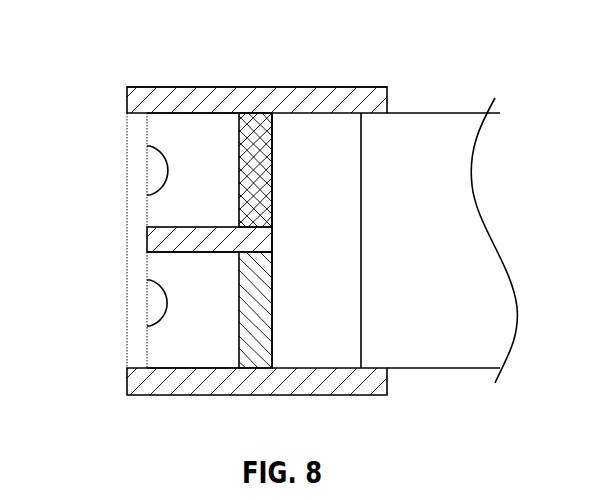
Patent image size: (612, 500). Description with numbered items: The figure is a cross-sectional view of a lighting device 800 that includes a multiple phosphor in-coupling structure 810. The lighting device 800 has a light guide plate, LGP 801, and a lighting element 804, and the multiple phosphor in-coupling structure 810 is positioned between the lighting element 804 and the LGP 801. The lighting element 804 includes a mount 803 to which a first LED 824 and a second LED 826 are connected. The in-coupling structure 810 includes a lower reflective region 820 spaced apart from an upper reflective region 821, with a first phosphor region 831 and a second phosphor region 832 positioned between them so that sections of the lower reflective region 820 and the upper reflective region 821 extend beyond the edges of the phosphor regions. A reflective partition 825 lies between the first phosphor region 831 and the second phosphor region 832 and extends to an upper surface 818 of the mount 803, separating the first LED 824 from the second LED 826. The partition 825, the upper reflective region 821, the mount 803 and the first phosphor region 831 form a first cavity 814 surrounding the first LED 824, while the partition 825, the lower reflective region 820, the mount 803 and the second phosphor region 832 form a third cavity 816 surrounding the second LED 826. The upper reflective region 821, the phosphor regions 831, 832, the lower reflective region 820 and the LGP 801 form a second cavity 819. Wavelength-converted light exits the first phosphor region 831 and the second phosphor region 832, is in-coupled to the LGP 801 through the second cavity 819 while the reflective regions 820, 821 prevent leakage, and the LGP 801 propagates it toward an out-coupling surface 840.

The lighting device 800 is at (85, 72).
The light guide plate 801 is at (452, 132).
The mount 803 is at (132, 200).
The lighting element 804 is at (125, 237).
The multiple phosphor in-coupling structure 810 is at (135, 88).
The first cavity 814 is at (197, 128).
The third cavity 816 is at (230, 332).
The upper surface 818 is at (152, 352).
The second cavity 819 is at (312, 132).
The lower reflective region 820 is at (350, 383).
The upper reflective region 821 is at (218, 92).
The first LED 824 is at (158, 172).
The reflective partition 825 is at (210, 253).
The second LED 826 is at (147, 308).
The first phosphor region 831 is at (247, 120).
The second phosphor region 832 is at (276, 322).
The out-coupling surface 840 is at (412, 113).